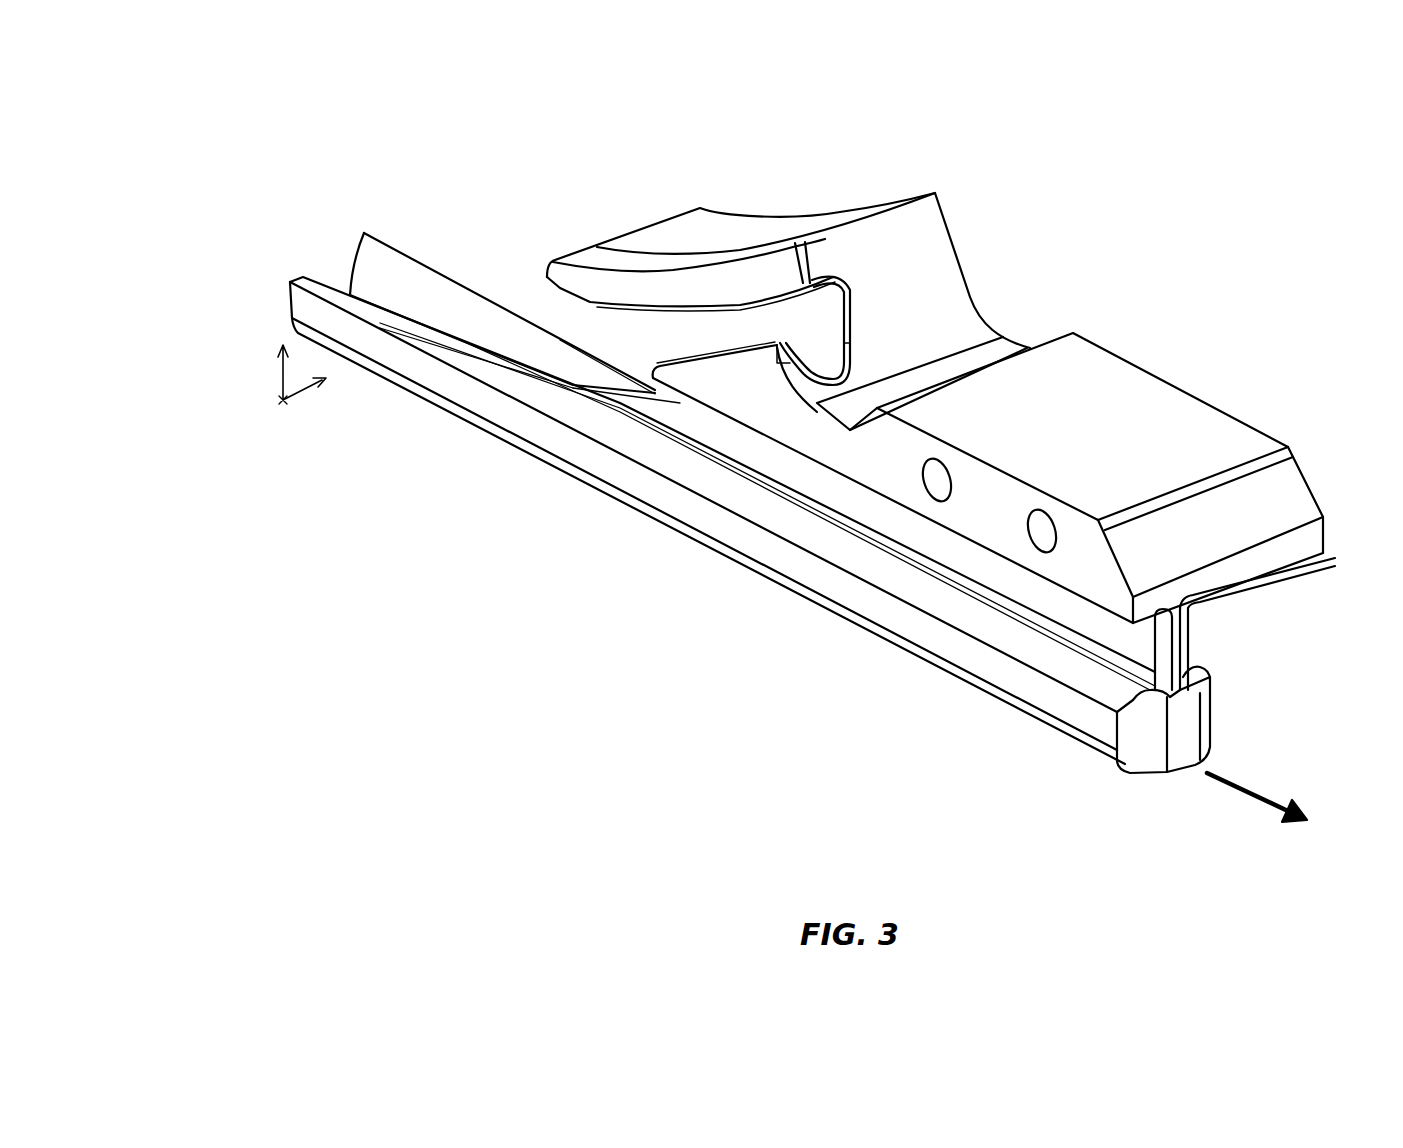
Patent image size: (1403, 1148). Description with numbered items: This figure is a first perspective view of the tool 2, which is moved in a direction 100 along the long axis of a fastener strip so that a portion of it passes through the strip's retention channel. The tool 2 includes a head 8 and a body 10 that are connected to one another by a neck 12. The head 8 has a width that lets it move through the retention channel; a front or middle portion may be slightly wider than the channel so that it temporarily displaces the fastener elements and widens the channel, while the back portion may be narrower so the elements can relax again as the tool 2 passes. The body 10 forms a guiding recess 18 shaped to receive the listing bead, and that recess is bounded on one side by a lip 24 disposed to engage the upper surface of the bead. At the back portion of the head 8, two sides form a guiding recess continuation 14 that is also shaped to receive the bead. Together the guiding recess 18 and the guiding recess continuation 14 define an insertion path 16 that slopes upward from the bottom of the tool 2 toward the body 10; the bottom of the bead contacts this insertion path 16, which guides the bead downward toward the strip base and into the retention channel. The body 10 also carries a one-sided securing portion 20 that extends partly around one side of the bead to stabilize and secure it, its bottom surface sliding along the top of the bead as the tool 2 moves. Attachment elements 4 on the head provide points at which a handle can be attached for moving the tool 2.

The tool 2 is at (437, 435).
The attachment elements 4 is at (943, 487).
The head 8 is at (1078, 712).
The body 10 is at (1183, 420).
The neck 12 is at (1143, 638).
The guiding recess continuation 14 is at (350, 289).
The insertion path 16 is at (640, 390).
The guiding recess 18 is at (813, 327).
The securing portion 20 is at (760, 233).
The lip 24 is at (725, 285).
The direction 100 is at (1253, 790).